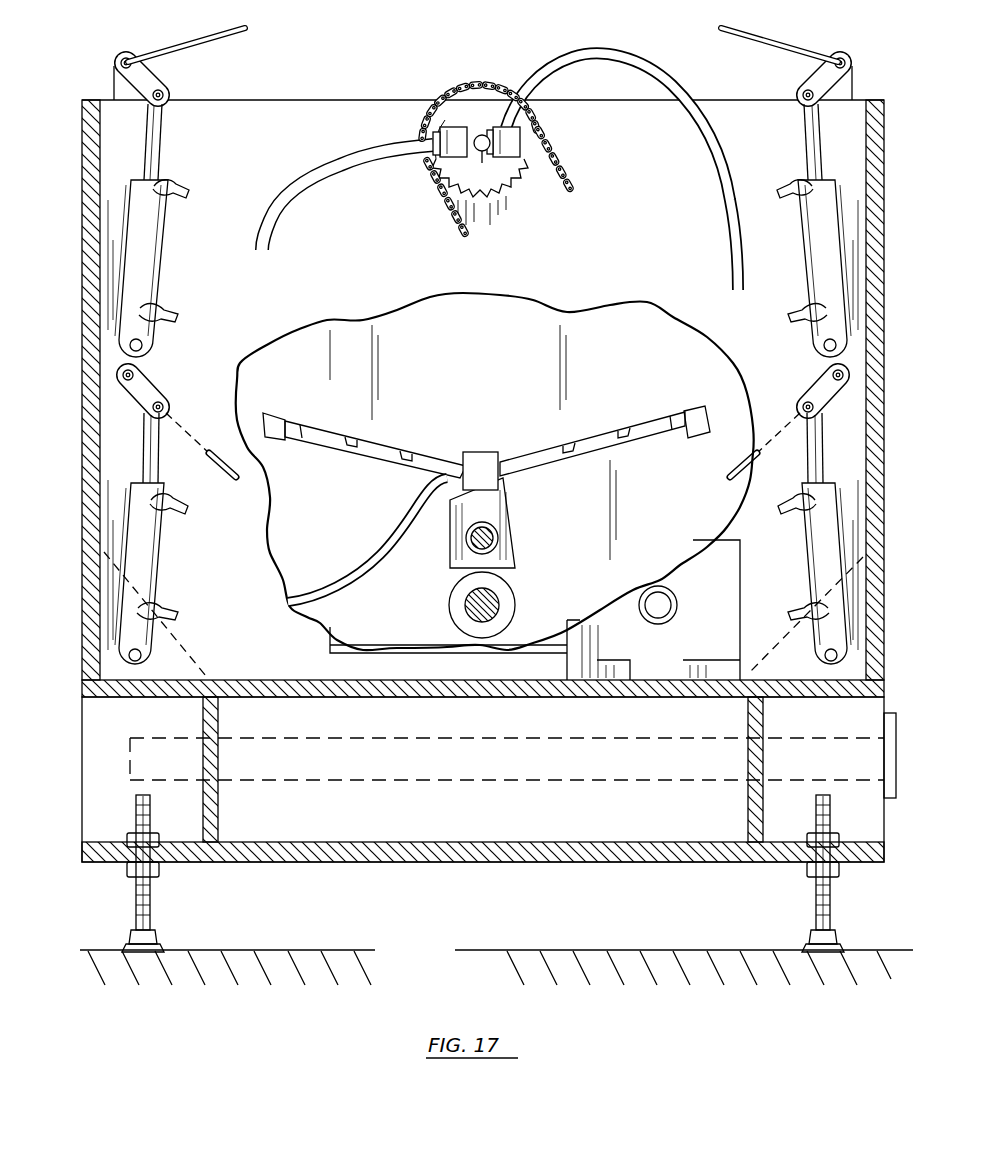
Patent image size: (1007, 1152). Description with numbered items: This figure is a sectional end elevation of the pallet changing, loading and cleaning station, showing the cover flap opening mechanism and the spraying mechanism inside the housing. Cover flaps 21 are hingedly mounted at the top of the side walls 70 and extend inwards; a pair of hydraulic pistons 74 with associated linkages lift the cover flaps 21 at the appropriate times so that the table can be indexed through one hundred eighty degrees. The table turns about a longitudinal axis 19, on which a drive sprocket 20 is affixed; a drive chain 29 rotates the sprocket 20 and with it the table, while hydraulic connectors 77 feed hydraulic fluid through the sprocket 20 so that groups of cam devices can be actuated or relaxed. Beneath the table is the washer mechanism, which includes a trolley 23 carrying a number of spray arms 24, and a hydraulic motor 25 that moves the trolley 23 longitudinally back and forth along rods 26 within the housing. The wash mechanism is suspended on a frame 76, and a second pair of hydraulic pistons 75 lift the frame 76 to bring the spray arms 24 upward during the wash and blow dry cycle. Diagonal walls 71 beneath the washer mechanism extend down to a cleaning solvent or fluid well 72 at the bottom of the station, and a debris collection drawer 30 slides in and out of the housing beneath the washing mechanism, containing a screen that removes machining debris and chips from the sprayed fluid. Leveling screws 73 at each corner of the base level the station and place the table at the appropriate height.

The longitudinal axis 19 is at (458, 180).
The drive sprocket 20 is at (473, 103).
The cover flaps 21 is at (210, 40).
The trolley 23 is at (512, 502).
The spray arms 24 is at (404, 452).
The hydraulic motor 25 is at (514, 610).
The rods 26 is at (486, 540).
The drive chain 29 is at (560, 162).
The debris collection drawer 30 is at (912, 671).
The side walls 70 is at (82, 240).
The diagonal walls 71 is at (200, 666).
The cleaning solvent or fluid well 72 is at (420, 846).
The leveling screws 73 is at (152, 903).
The hydraulic pistons 74 is at (152, 262).
The hydraulic pistons 75 is at (158, 565).
The frame 76 is at (730, 373).
The hydraulic connectors 77 is at (450, 140).